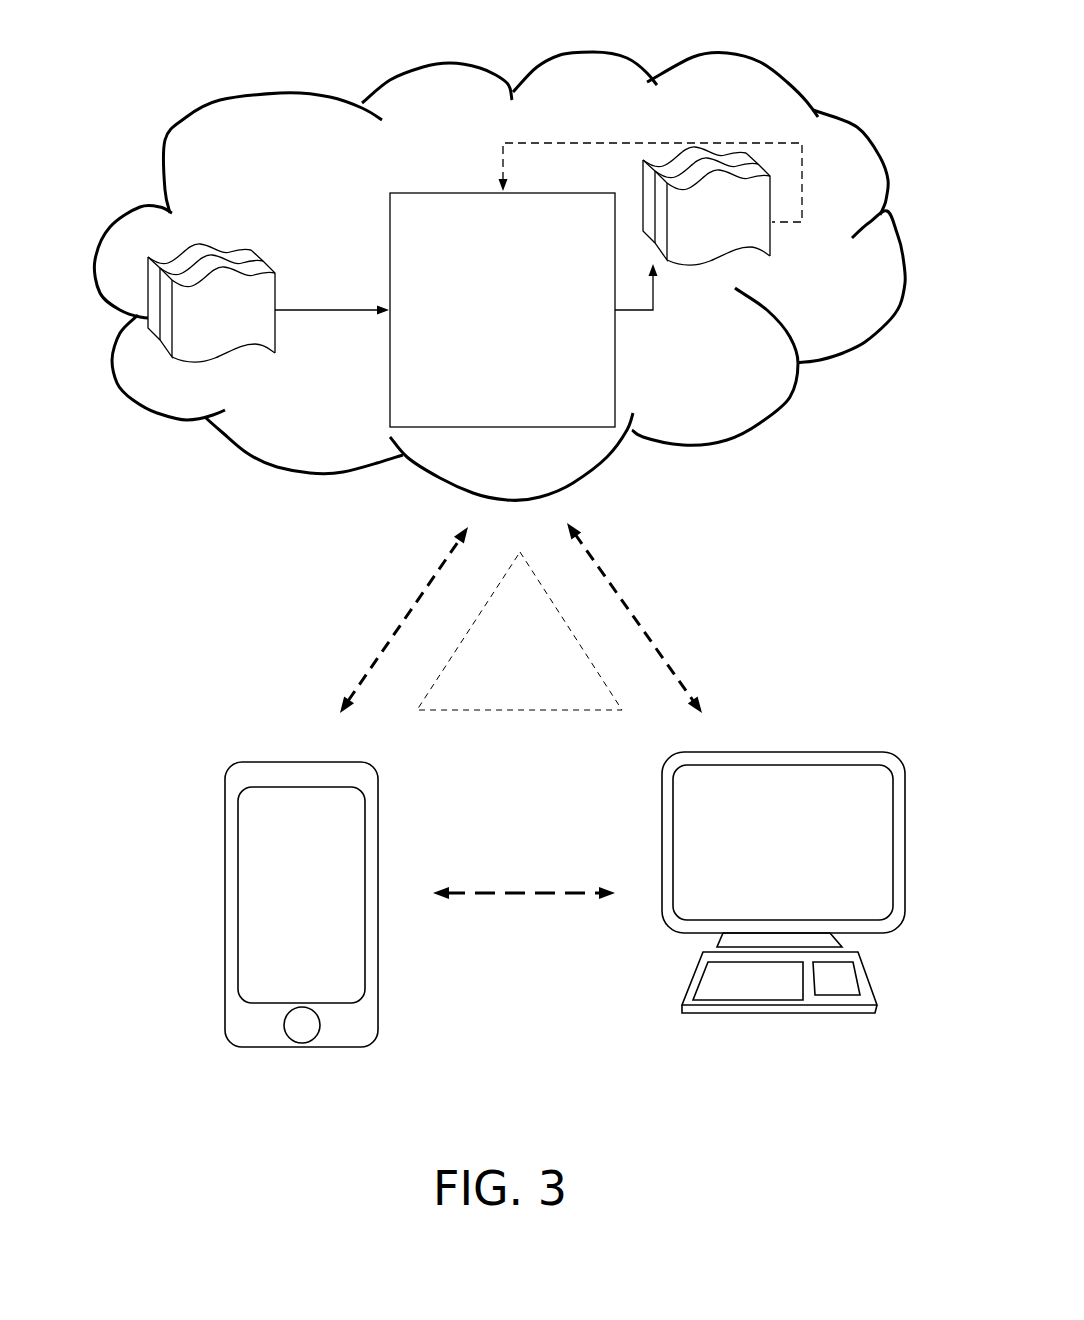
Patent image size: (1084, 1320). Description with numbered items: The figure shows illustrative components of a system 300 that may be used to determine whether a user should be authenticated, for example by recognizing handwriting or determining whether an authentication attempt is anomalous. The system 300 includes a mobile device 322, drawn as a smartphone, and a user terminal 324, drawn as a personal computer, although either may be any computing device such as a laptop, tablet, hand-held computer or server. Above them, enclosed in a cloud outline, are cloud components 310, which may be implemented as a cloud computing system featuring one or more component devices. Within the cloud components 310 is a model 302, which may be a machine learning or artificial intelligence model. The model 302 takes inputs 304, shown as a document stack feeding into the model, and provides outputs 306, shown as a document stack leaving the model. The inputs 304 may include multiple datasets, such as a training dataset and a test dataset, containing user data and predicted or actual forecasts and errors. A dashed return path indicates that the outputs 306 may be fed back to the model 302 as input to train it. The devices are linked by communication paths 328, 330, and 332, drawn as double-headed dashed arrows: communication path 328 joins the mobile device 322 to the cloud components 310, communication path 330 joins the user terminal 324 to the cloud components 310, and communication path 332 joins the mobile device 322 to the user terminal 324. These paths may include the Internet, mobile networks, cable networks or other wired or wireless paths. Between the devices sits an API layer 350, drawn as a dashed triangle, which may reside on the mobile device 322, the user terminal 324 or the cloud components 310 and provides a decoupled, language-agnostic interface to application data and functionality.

The system 300 is at (515, 50).
The model 302 is at (519, 322).
The inputs 304 is at (228, 244).
The outputs 306 is at (753, 252).
The cloud components 310 is at (767, 108).
The mobile device 322 is at (293, 738).
The user terminal 324 is at (777, 743).
The communication path 328 is at (365, 607).
The communication path 330 is at (705, 580).
The communication path 332 is at (517, 863).
The API layer 350 is at (537, 653).